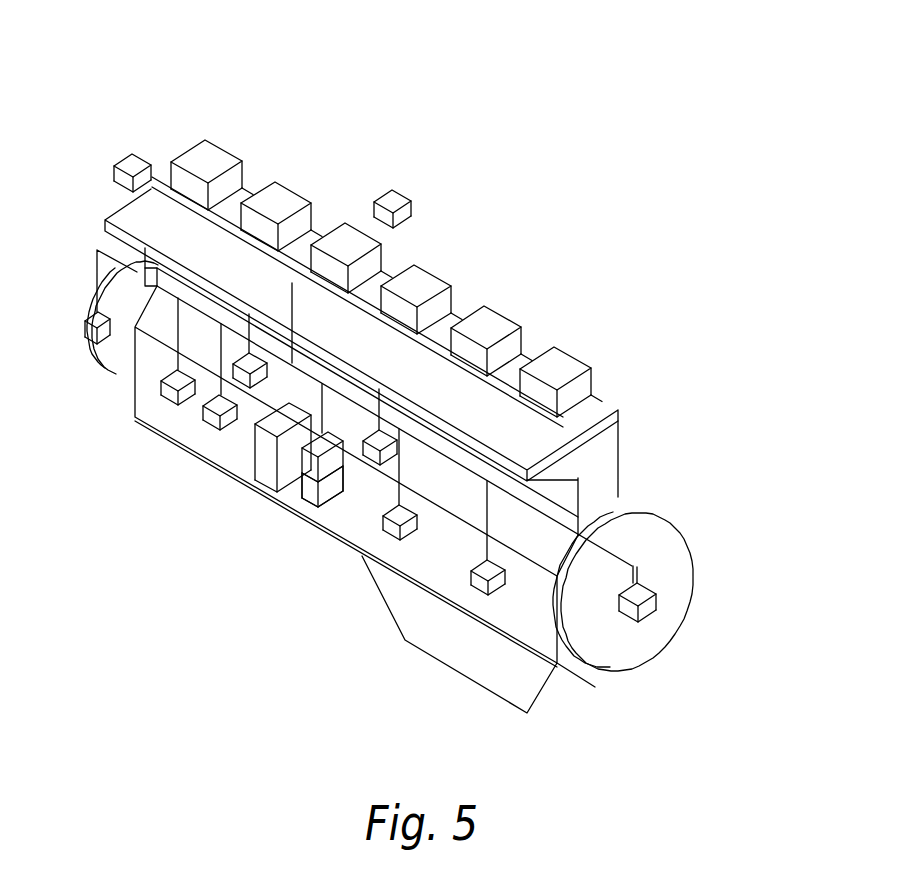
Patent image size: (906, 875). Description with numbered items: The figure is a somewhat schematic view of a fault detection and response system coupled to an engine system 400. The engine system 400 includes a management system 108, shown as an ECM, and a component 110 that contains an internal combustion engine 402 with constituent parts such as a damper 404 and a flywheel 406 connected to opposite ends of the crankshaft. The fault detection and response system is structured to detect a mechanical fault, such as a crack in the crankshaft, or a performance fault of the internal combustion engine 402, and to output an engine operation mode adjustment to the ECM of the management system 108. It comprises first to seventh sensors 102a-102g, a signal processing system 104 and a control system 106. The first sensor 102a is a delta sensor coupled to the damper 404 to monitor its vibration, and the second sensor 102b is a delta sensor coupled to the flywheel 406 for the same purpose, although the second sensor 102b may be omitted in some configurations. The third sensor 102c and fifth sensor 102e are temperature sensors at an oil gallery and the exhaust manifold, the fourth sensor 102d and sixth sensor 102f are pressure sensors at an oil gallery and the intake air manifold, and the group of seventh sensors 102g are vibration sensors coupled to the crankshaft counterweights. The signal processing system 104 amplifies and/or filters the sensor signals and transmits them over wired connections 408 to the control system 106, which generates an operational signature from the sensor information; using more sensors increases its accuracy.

The engine system 400 is at (382, 132).
The internal combustion engine 402 is at (322, 203).
The damper 404 is at (112, 282).
The flywheel 406 is at (665, 552).
The wired connections 408 is at (447, 457).
The component 110 is at (515, 298).
The first sensor 102a is at (92, 338).
The second sensor 102b is at (635, 566).
The third sensor 102c is at (380, 430).
The fourth sensor 102d is at (255, 351).
The fifth sensor 102e is at (413, 206).
The sixth sensor 102f is at (136, 158).
The seventh sensors 102g is at (168, 400).
The signal processing system 104 is at (310, 493).
The control system 106 is at (310, 490).
The management system 108 is at (273, 450).